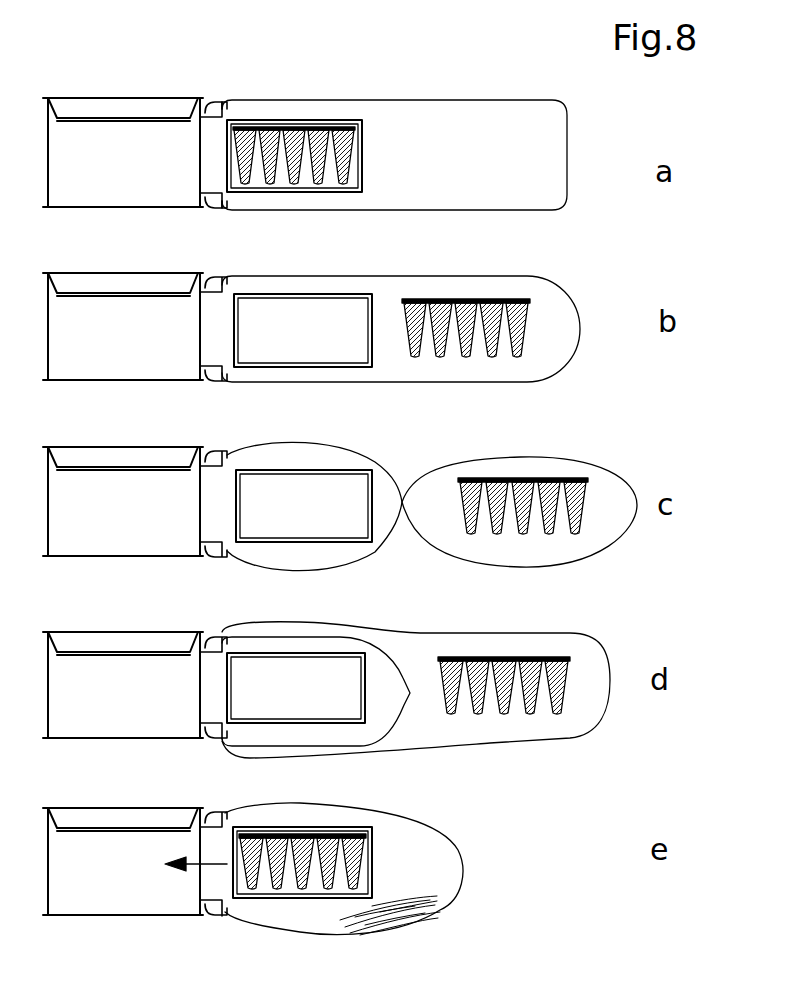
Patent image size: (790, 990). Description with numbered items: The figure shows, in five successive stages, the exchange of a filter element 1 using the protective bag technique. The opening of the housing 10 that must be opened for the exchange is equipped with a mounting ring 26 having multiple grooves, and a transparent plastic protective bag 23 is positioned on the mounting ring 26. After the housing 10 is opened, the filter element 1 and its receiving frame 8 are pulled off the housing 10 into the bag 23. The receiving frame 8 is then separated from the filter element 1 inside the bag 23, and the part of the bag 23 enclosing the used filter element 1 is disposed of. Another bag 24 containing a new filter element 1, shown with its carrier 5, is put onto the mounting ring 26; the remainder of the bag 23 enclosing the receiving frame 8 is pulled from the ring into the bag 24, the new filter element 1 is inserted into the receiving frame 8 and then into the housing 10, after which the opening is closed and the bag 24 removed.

The filter element 1 is at (296, 135).
The carrier strip 5 is at (433, 302).
The receiving frame 8 is at (255, 120).
The housing 10 is at (108, 95).
The protective bag 23 is at (381, 99).
The bag 24 is at (580, 645).
The mounting ring 26 is at (218, 97).